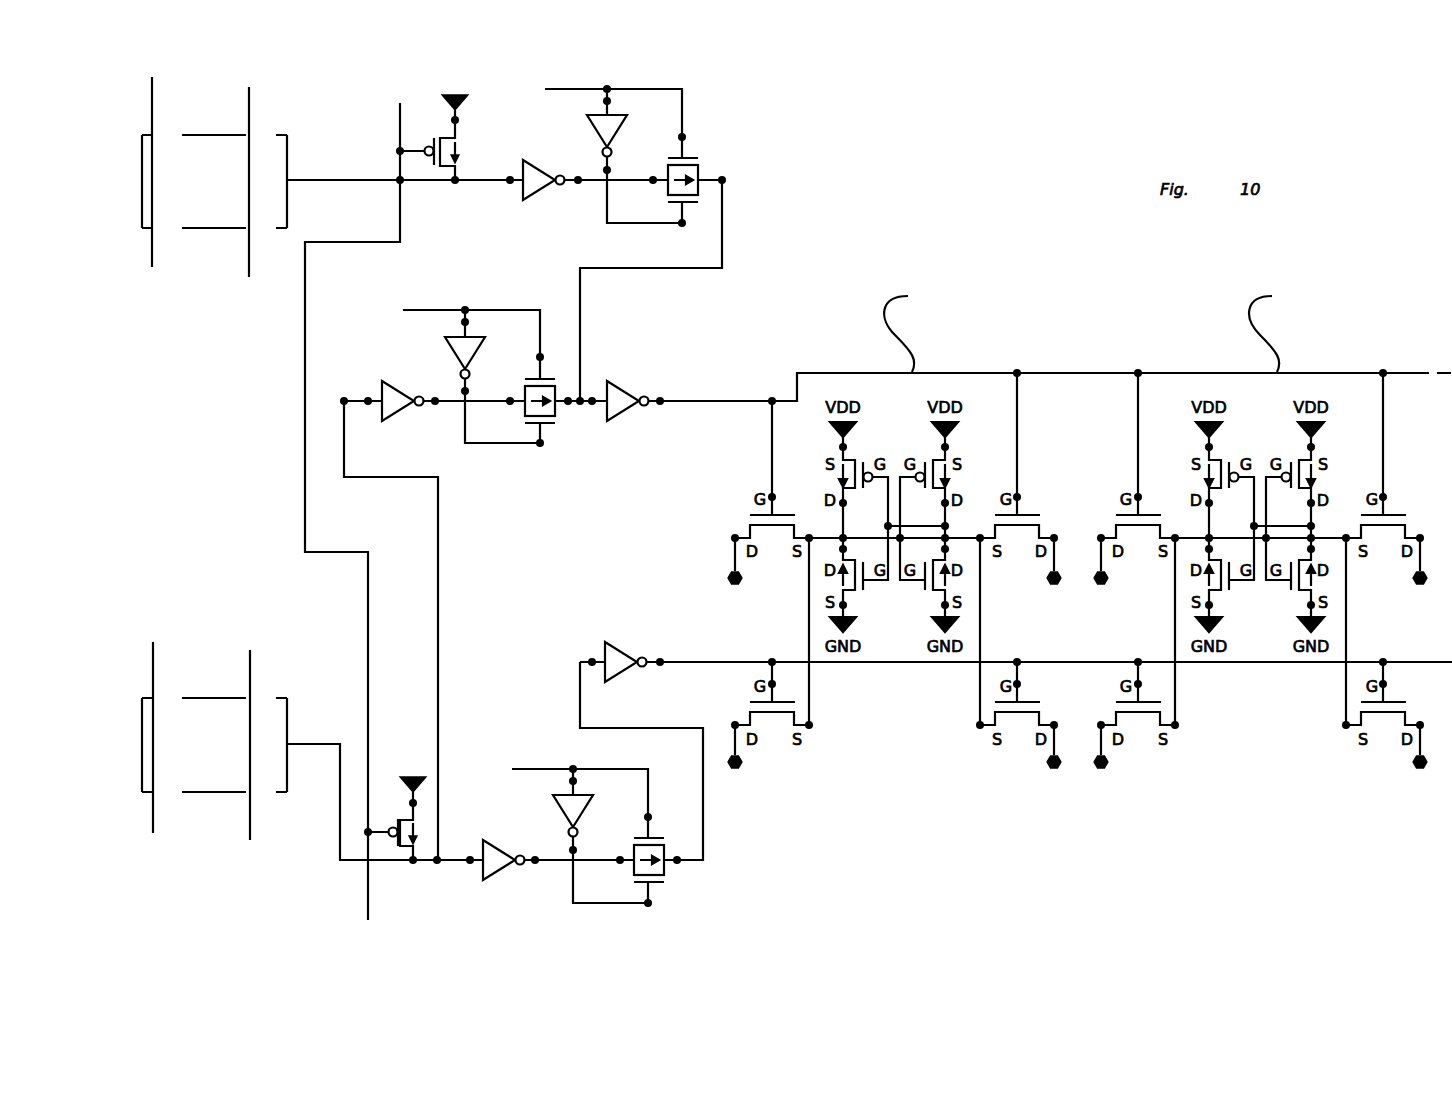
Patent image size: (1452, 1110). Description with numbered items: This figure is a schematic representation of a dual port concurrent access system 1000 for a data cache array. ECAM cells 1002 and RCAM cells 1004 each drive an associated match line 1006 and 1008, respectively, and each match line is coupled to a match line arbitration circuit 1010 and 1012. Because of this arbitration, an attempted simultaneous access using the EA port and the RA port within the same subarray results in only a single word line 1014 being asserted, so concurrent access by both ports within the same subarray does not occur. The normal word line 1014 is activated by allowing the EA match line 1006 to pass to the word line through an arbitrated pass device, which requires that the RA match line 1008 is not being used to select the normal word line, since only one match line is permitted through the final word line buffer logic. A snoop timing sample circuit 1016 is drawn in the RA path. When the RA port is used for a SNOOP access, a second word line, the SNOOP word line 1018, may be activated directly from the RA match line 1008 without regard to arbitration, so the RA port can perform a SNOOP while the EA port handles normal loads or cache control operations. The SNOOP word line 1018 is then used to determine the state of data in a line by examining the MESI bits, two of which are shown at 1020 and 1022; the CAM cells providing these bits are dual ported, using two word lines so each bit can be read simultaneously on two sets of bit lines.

The cache tag circuit 1000 is at (990, 203).
The ECAM cells 1002 is at (203, 229).
The RCAM cells 1004 is at (205, 793).
The match line 1006 is at (360, 110).
The match line 1008 is at (287, 658).
The match line arbitration circuit 1010 is at (682, 137).
The match line arbitration circuit 1012 is at (540, 357).
The word line 1014 is at (722, 402).
The snoop timing sample circuit 1016 is at (648, 817).
The SNOOP word line 1018 is at (718, 662).
The MESI bit 1020 is at (920, 662).
The MESI bit 1022 is at (1283, 662).